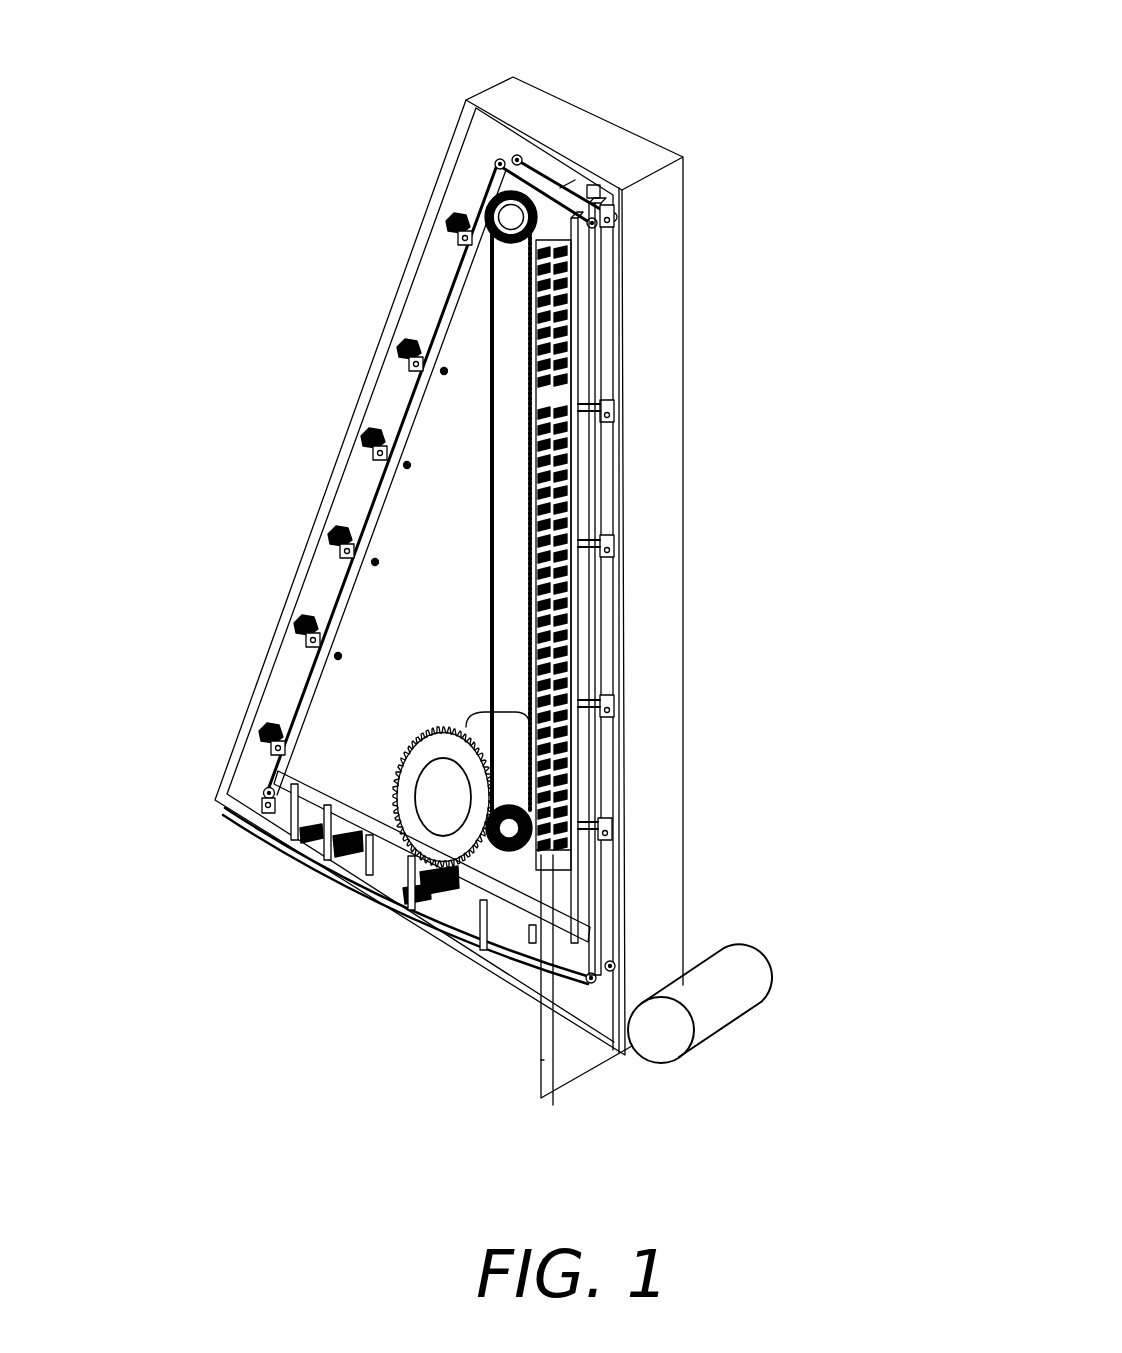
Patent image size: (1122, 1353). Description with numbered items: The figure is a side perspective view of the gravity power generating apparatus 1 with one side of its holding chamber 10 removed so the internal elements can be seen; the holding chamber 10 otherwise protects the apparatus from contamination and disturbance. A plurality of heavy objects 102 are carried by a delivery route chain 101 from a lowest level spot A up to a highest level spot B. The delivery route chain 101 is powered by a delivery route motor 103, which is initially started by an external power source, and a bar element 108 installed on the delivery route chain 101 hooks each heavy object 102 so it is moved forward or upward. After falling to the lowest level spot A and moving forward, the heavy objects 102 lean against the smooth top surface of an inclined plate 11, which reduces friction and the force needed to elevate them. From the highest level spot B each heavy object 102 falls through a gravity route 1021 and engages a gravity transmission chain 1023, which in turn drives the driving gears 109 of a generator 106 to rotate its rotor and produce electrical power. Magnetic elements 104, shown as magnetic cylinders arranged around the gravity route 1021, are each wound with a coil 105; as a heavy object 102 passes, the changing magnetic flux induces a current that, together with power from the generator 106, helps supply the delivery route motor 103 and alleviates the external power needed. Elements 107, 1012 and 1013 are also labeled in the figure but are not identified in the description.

The gravity power generating apparatus 1 is at (647, 40).
The holding chamber 10 is at (465, 180).
The inclined plate 11 is at (359, 582).
The delivery route chain 101 is at (411, 392).
The heavy object 102 is at (363, 440).
The delivery route motor 103 is at (713, 1008).
The magnetic element 104 is at (521, 525).
The coil 105 is at (521, 424).
The generator 106 is at (470, 727).
The connecting rod 107 is at (566, 175).
The bar element 108 is at (623, 404).
The driving gear 109 is at (392, 785).
The mounting hole 1012 is at (375, 460).
The support post 1013 is at (345, 858).
The gravity route 1021 is at (521, 302).
The gravity transmission chain 1023 is at (493, 324).
The lowest level spot A is at (548, 1062).
The highest level spot B is at (558, 188).